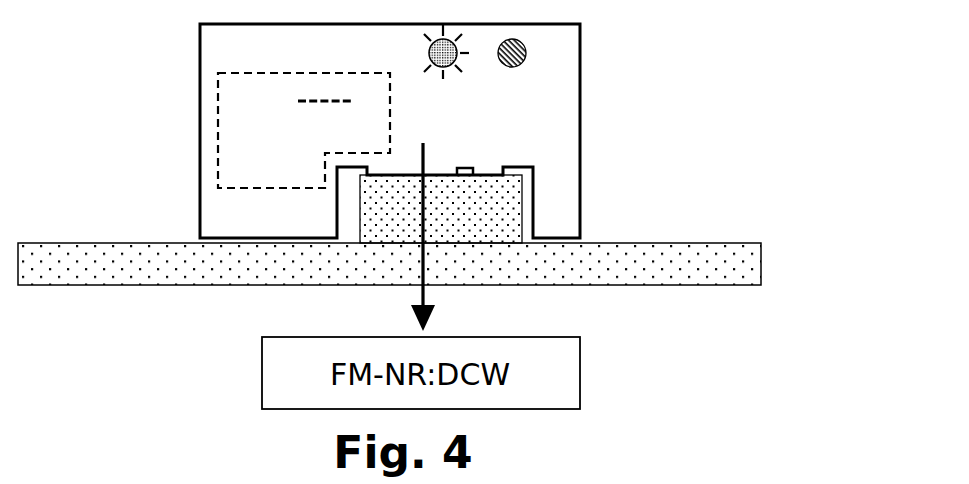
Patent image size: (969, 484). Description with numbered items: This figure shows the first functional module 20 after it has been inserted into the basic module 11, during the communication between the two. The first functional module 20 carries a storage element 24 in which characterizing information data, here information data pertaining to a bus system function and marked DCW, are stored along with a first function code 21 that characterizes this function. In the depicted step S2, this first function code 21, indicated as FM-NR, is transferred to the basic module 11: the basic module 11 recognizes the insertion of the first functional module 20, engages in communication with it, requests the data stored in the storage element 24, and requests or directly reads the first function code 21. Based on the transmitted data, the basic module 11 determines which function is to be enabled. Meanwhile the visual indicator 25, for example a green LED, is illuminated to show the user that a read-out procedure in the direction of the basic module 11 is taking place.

The basic module 11 is at (677, 262).
The first functional module 20 is at (580, 103).
The first function code 21 is at (220, 133).
The storage element 24 is at (218, 92).
The visual indicator 25 is at (426, 53).
The step S2 is at (423, 263).